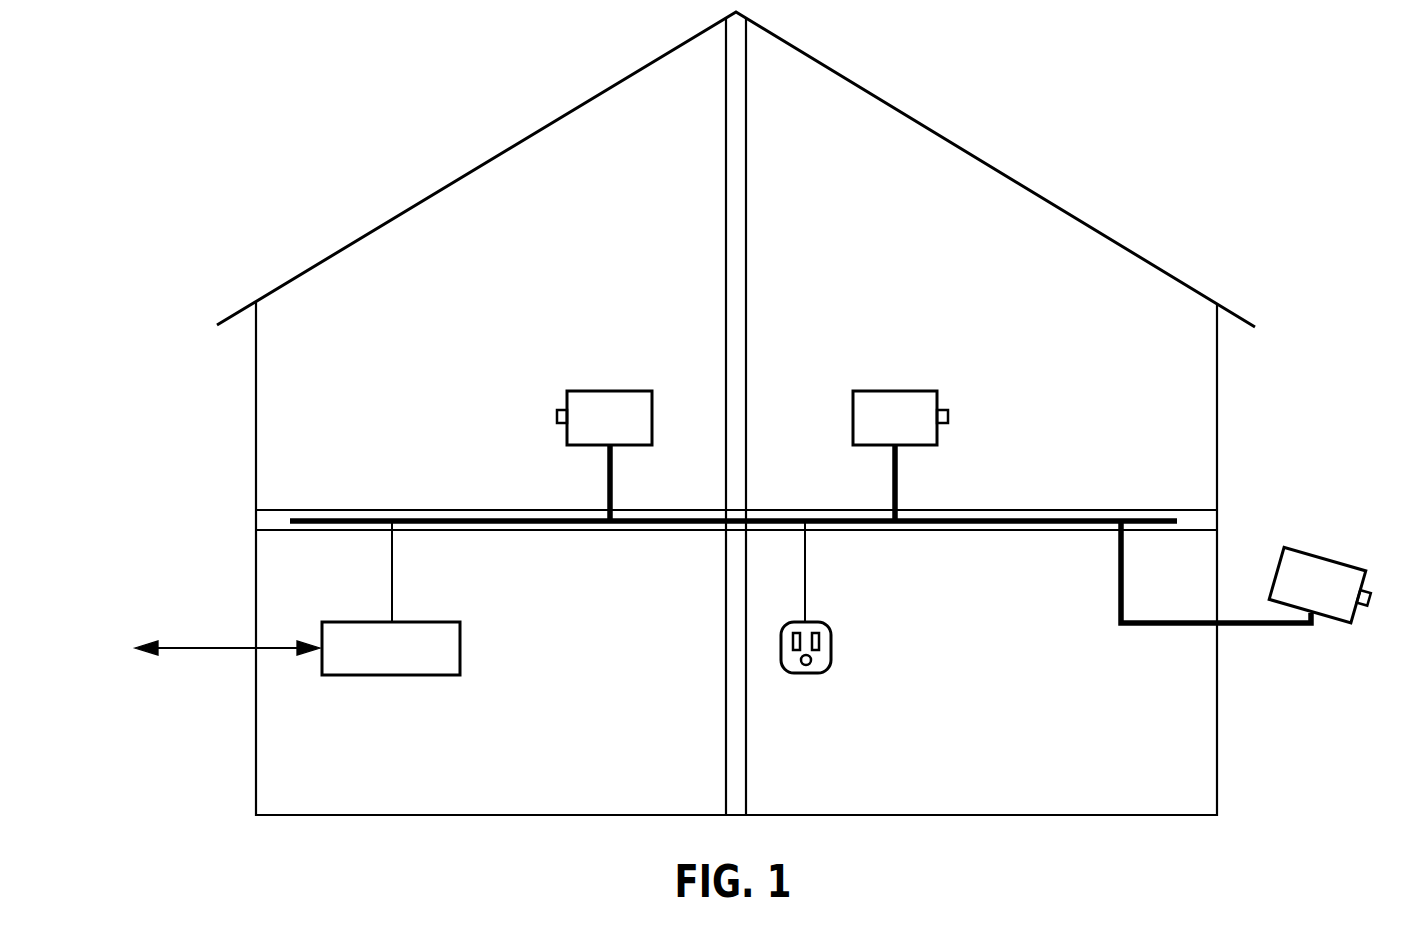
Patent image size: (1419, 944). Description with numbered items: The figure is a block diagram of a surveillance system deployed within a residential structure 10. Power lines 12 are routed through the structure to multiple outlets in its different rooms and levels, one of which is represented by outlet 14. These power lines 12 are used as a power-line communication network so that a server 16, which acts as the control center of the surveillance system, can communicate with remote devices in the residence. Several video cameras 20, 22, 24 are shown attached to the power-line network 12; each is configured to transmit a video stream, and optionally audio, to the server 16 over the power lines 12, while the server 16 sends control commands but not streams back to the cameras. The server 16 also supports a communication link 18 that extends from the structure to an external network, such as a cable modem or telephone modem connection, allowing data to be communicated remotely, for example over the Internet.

The residential structure 10 is at (178, 140).
The power lines 12 is at (340, 517).
The outlet 14 is at (832, 647).
The server 16 is at (463, 648).
The communication link 18 is at (196, 645).
The video camera 20 is at (617, 390).
The video camera 22 is at (895, 390).
The video camera 24 is at (1322, 558).